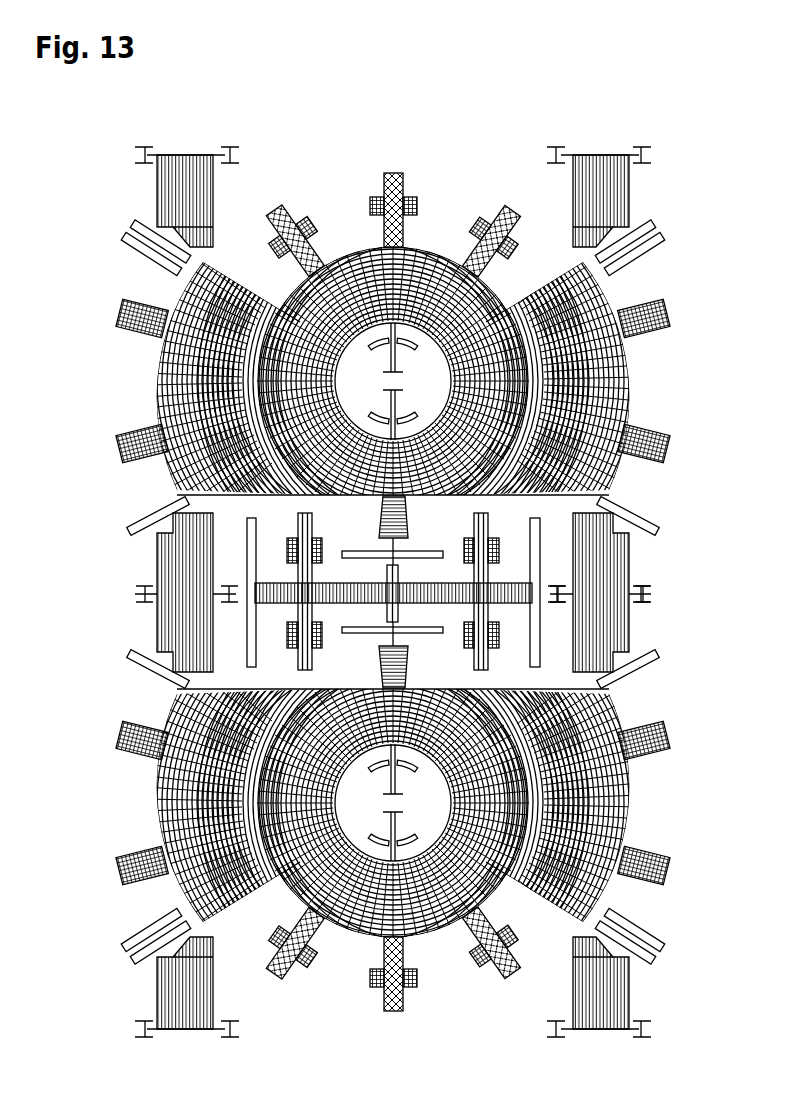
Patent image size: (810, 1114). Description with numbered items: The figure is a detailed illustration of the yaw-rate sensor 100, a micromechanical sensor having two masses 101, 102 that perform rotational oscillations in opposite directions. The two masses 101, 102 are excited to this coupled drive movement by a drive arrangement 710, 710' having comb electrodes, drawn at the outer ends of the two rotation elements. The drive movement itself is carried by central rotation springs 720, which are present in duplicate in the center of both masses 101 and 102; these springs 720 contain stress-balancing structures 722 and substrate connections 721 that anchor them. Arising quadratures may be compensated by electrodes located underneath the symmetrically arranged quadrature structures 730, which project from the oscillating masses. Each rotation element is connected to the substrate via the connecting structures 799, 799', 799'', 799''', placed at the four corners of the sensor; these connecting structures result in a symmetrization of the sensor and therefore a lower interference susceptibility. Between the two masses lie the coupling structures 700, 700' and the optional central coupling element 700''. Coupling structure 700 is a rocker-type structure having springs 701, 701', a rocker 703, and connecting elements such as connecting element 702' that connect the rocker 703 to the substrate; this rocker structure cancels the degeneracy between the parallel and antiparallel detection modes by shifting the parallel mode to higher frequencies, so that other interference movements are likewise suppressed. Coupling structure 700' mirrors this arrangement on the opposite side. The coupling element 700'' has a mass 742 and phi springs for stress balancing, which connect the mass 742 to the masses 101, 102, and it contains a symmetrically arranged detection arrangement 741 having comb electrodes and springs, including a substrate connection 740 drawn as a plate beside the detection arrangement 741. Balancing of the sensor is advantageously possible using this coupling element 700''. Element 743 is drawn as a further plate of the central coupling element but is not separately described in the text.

The yaw-rate sensor 100 is at (683, 85).
The mass 101 is at (540, 368).
The mass 102 is at (540, 815).
The drive arrangement 710 is at (393, 316).
The drive arrangement 710' is at (393, 870).
The central rotation spring 720 is at (182, 268).
The substrate connection 721 is at (390, 372).
The stress-balancing structure 722 is at (380, 335).
The quadrature structure 730 is at (120, 452).
The connecting structure 799 is at (138, 197).
The connecting structure 799' is at (648, 197).
The connecting structure 799'' is at (138, 987).
The connecting structure 799''' is at (653, 987).
The coupling structure 700 is at (645, 592).
The coupling structure 700' is at (137, 592).
The coupling element 700'' is at (571, 605).
The spring 701 is at (670, 515).
The spring 701' is at (673, 675).
The connecting element 702' is at (657, 616).
The rocker 703 is at (612, 604).
The substrate connection 740 is at (250, 612).
The detection arrangement 741 is at (333, 595).
The mass 742 is at (303, 648).
The plate 743 is at (360, 630).